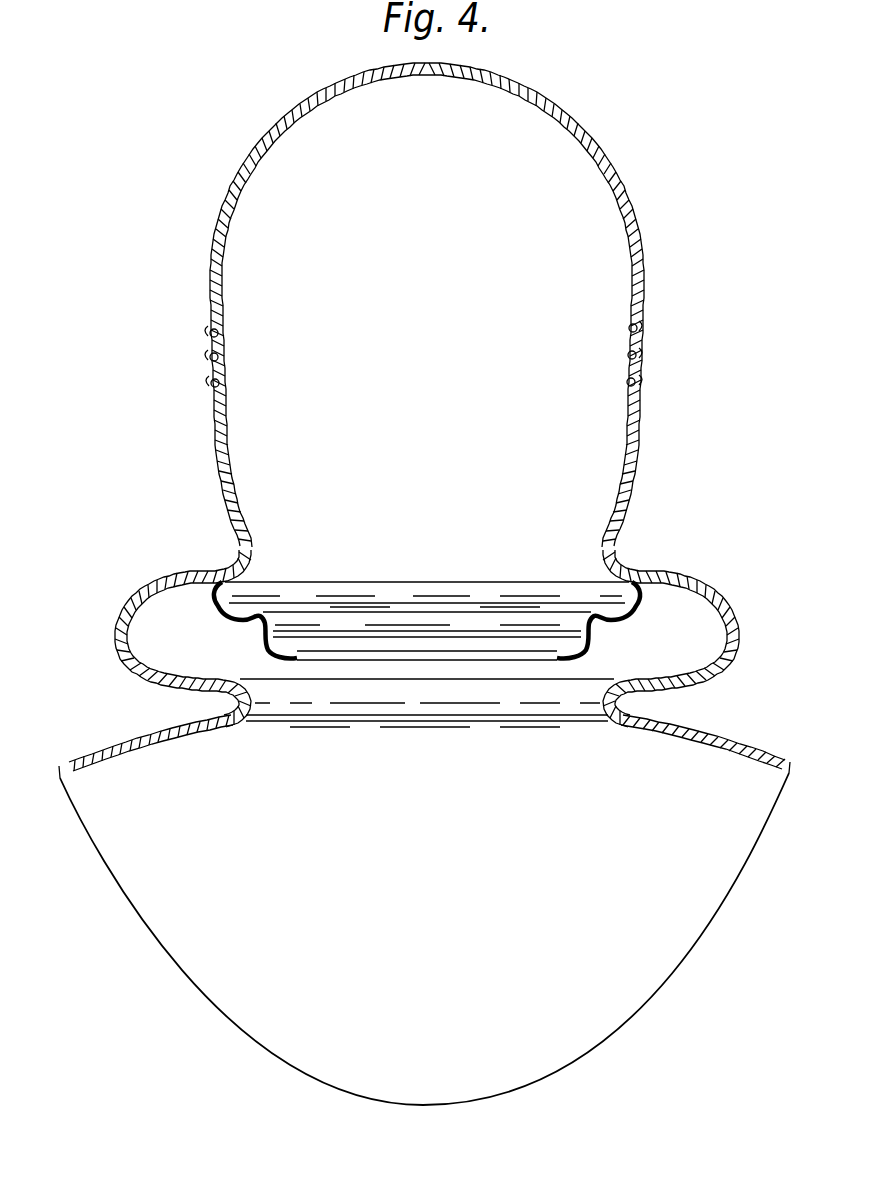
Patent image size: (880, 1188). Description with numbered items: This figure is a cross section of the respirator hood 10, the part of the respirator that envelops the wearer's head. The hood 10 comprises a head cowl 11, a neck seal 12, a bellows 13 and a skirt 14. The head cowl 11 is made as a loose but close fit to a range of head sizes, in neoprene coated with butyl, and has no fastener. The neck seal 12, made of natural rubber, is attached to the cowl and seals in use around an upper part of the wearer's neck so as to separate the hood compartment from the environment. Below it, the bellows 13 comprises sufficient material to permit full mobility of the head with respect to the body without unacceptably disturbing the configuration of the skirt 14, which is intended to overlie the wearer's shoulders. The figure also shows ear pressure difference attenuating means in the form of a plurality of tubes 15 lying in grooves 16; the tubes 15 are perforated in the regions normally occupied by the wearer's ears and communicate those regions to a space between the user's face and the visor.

The hood 10 is at (282, 112).
The head cowl 11 is at (220, 220).
The neck seal 12 is at (590, 658).
The bellows 13 is at (117, 620).
The skirt 14 is at (716, 733).
The tubes 15 is at (624, 380).
The grooves 16 is at (641, 354).